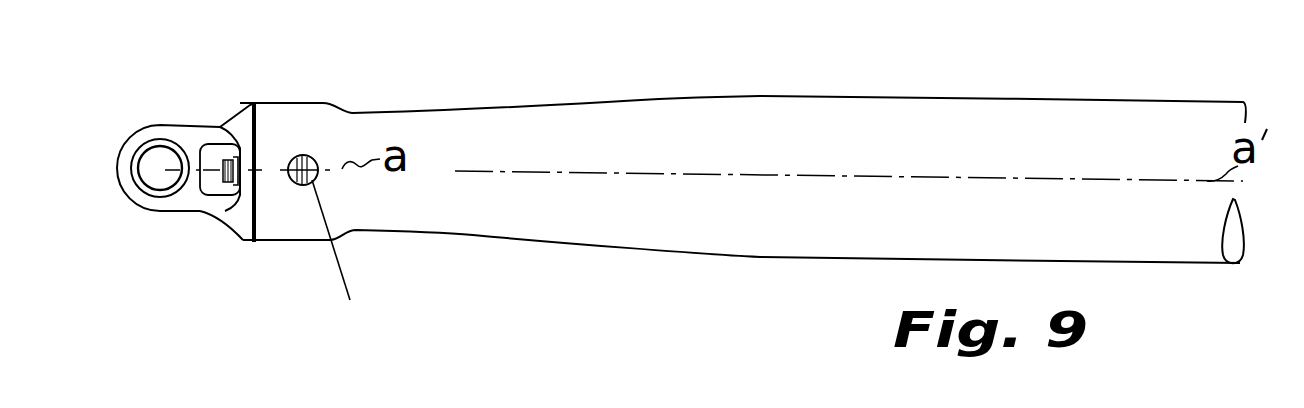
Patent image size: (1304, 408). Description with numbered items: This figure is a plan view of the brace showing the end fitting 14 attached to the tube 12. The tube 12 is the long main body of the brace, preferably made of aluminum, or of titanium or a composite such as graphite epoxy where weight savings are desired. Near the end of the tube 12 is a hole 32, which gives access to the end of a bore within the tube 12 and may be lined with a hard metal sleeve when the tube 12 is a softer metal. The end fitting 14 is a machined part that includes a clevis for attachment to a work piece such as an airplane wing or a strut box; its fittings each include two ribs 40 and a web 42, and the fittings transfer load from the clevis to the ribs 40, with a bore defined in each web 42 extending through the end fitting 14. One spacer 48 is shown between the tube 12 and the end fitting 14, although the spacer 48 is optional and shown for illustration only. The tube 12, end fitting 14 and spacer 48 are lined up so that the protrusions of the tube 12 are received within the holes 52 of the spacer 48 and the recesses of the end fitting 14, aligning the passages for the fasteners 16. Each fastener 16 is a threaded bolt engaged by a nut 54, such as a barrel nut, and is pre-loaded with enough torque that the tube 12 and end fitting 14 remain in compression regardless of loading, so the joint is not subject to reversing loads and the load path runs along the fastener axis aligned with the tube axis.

The tube 12 is at (940, 72).
The end fitting 14 is at (190, 108).
The fastener 16 is at (229, 185).
The hole 32 is at (304, 155).
The rib 40 is at (216, 137).
The web 42 is at (255, 103).
The spacer 48 is at (254, 240).
The hole of the spacer 52 is at (388, 396).
The nut 54 is at (350, 300).